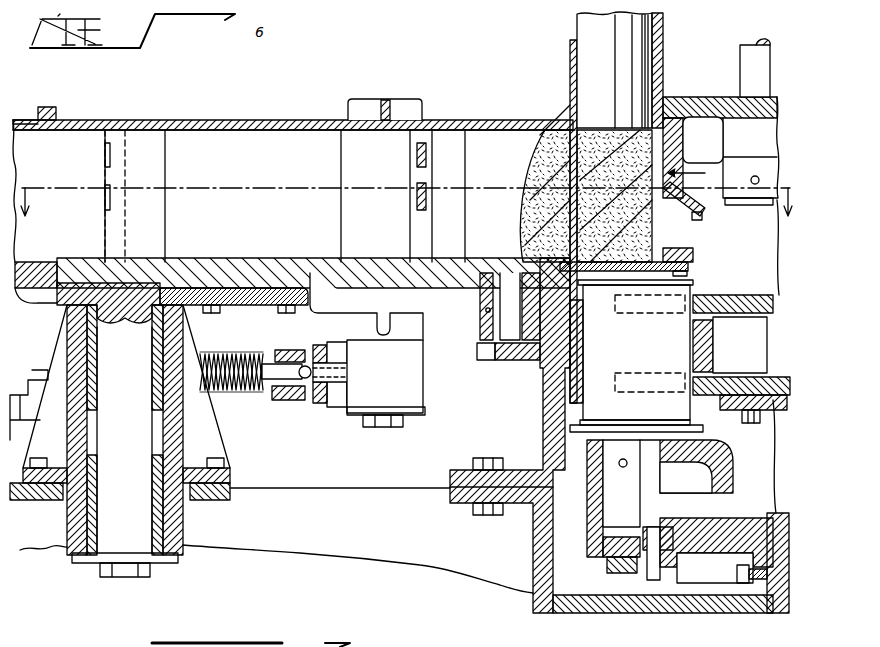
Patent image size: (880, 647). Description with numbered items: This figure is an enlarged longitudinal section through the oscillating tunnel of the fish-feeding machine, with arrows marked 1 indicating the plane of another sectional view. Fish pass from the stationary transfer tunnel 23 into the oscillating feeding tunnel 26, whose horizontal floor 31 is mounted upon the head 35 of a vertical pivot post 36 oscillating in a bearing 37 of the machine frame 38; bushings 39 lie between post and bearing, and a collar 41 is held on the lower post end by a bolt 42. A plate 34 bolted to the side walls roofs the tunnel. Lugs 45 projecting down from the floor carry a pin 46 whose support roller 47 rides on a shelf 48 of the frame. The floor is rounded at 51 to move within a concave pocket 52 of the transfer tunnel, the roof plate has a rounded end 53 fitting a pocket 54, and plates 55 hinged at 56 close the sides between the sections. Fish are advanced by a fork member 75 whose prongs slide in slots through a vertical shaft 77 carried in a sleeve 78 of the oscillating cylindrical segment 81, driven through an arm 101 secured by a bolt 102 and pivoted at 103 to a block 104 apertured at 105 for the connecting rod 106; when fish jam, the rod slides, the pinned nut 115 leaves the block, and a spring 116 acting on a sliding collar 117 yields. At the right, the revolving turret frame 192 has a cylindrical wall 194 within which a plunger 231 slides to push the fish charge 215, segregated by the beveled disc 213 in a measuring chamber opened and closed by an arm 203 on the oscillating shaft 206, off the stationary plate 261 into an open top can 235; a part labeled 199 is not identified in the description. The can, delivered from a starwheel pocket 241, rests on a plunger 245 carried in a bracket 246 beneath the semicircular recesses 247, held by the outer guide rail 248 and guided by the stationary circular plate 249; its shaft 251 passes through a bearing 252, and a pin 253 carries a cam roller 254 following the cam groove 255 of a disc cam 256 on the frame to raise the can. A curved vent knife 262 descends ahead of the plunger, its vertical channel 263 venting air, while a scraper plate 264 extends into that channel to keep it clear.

The section line 1 is at (408, 210).
The transfer tunnel 23 is at (27, 265).
The feeding tunnel 26 is at (263, 140).
The horizontal floor 31 is at (208, 263).
The plate 34 is at (228, 126).
The head 35 is at (248, 306).
The vertical pivot post 36 is at (125, 430).
The bearing 37 is at (176, 428).
The frame 38 is at (70, 333).
The bushings 39 is at (94, 396).
The collar 41 is at (90, 562).
The bolt 42 is at (128, 570).
The lugs 45 is at (481, 290).
The pin 46 is at (483, 313).
The support roller 47 is at (510, 306).
The shelf 48 is at (525, 353).
The rounded end 51 is at (61, 276).
The concave pocket 52 is at (46, 300).
The rounded end 53 is at (58, 122).
The pocket 54 is at (45, 126).
The plates 55 is at (160, 150).
The hinge 56 is at (105, 152).
The fork member 75 is at (417, 158).
The vertical shaft 77 is at (426, 172).
The sleeve 78 is at (447, 139).
The oscillating cylindrical segment 81 is at (350, 162).
The arm 101 is at (386, 377).
The bolt 102 is at (386, 427).
The pivot 103 is at (333, 345).
The block 104 is at (343, 392).
The aperture 105 is at (306, 362).
The connecting rod 106 is at (265, 382).
The nut 115 is at (384, 370).
The spring 116 is at (213, 362).
The collar 117 is at (295, 401).
The upper frame 192 is at (730, 100).
The cylindrical wall 194 is at (672, 133).
The chamber 199 is at (775, 343).
The arm 203 is at (735, 193).
The oscillating shaft 206 is at (754, 45).
The beveled disc 213 is at (570, 72).
The fish charge 215 is at (645, 157).
The plunger 231 is at (585, 30).
The open top cans 235 is at (636, 356).
The can pockets 241 is at (700, 394).
The plunger 245 is at (676, 432).
The bracket 246 is at (730, 438).
The semicircular recesses 247 is at (715, 298).
The outer guide rail 248 is at (583, 353).
The stationary circular plate 249 is at (713, 335).
The vertically movable shaft 251 is at (637, 508).
The bearing 252 is at (590, 515).
The pin 253 is at (612, 555).
The cam roller 254 is at (668, 530).
The cam groove 255 is at (658, 580).
The disc cam 256 is at (730, 553).
The stationary plate 261 is at (690, 266).
The curved vent knife 262 is at (665, 35).
The vertical channel 263 is at (701, 173).
The scraper plate 264 is at (692, 205).